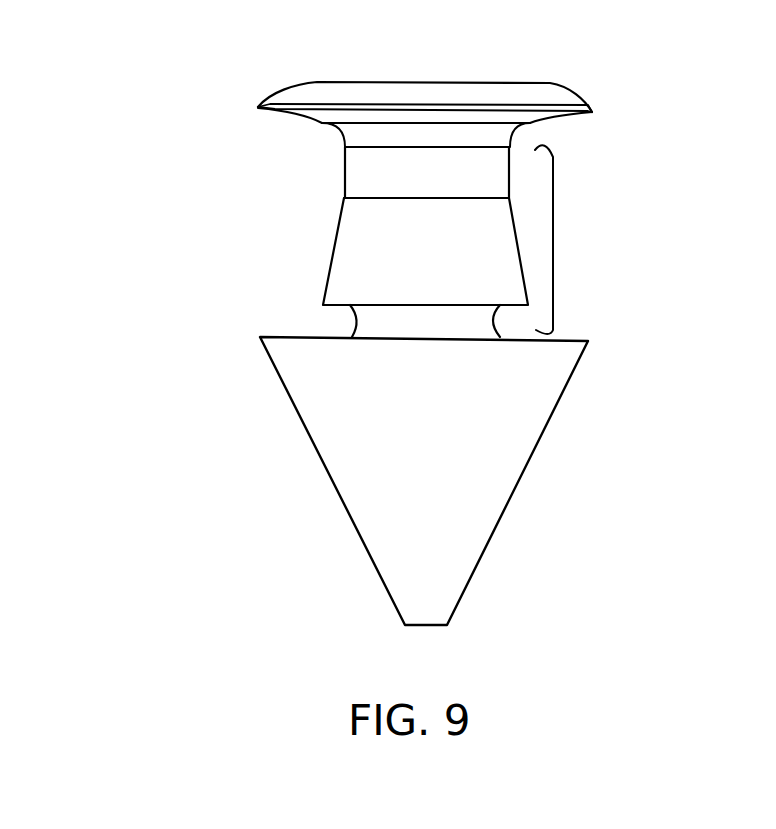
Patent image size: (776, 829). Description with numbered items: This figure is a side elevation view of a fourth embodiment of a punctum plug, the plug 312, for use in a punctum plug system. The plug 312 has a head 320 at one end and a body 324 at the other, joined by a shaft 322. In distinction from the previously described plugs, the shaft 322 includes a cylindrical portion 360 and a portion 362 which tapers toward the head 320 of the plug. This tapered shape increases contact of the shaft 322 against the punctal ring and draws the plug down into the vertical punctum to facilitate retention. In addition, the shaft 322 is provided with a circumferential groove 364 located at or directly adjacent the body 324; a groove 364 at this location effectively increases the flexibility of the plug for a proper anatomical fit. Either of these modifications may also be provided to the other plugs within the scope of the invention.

The plug 312 is at (622, 256).
The head 320 is at (328, 98).
The shaft 322 is at (553, 250).
The body 324 is at (315, 428).
The cylindrical portion 360 is at (350, 170).
The tapering portion 362 is at (332, 255).
The circumferential groove 364 is at (350, 323).